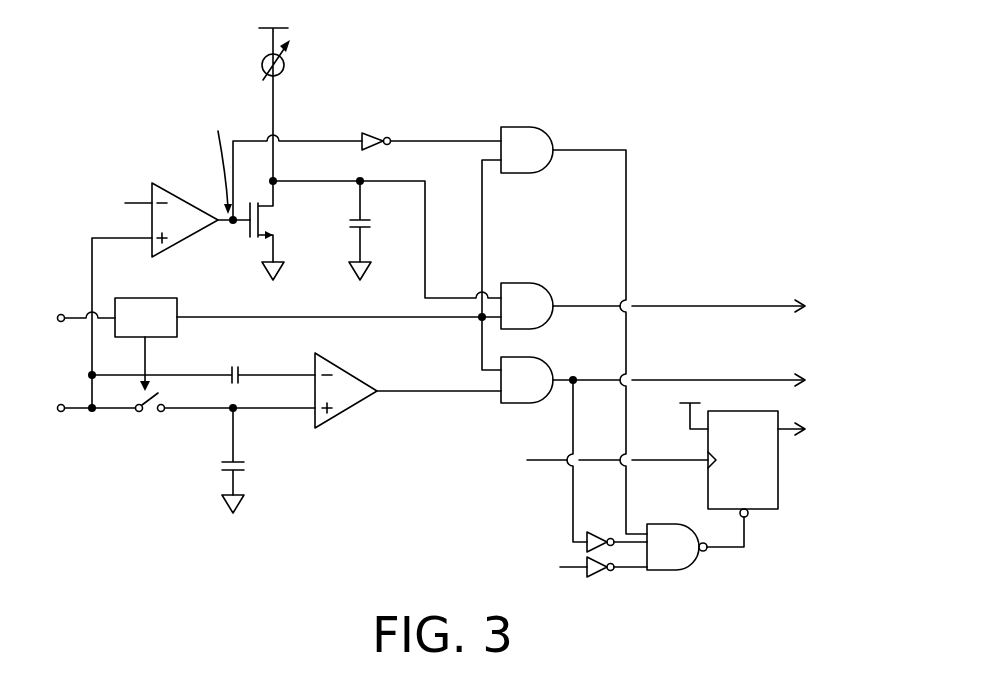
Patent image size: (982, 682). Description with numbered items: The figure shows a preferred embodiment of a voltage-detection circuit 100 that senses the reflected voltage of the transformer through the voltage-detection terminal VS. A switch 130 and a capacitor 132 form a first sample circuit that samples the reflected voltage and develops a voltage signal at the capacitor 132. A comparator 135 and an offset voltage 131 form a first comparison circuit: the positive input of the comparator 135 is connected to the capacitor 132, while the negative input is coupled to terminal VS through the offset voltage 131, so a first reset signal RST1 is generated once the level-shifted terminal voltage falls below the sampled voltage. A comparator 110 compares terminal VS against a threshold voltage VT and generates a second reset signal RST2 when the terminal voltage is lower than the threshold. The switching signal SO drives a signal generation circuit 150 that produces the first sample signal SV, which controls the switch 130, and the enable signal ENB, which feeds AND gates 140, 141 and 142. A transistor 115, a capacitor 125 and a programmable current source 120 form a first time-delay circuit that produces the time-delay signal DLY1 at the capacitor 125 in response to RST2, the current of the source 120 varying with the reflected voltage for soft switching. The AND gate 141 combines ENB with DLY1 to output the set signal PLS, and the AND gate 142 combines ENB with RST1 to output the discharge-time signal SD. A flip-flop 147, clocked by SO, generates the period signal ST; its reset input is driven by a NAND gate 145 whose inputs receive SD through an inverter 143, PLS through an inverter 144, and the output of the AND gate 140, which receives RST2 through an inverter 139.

The voltage-detection circuit 100 is at (436, 321).
The comparator 110 is at (185, 199).
The transistor 115 is at (265, 222).
The programmable current source 120 is at (262, 66).
The capacitor 125 is at (366, 218).
The switch 130 is at (151, 401).
The offset voltage 131 is at (238, 366).
The capacitor 132 is at (244, 463).
The comparator 135 is at (342, 362).
The inverter 139 is at (374, 132).
The AND gate 140 is at (518, 127).
The AND gate 141 is at (518, 283).
The AND gate 142 is at (518, 357).
The inverter 143 is at (599, 530).
The inverter 144 is at (598, 578).
The NAND gate 145 is at (662, 524).
The flip-flop 147 is at (780, 470).
The signal generation circuit 150 is at (145, 298).